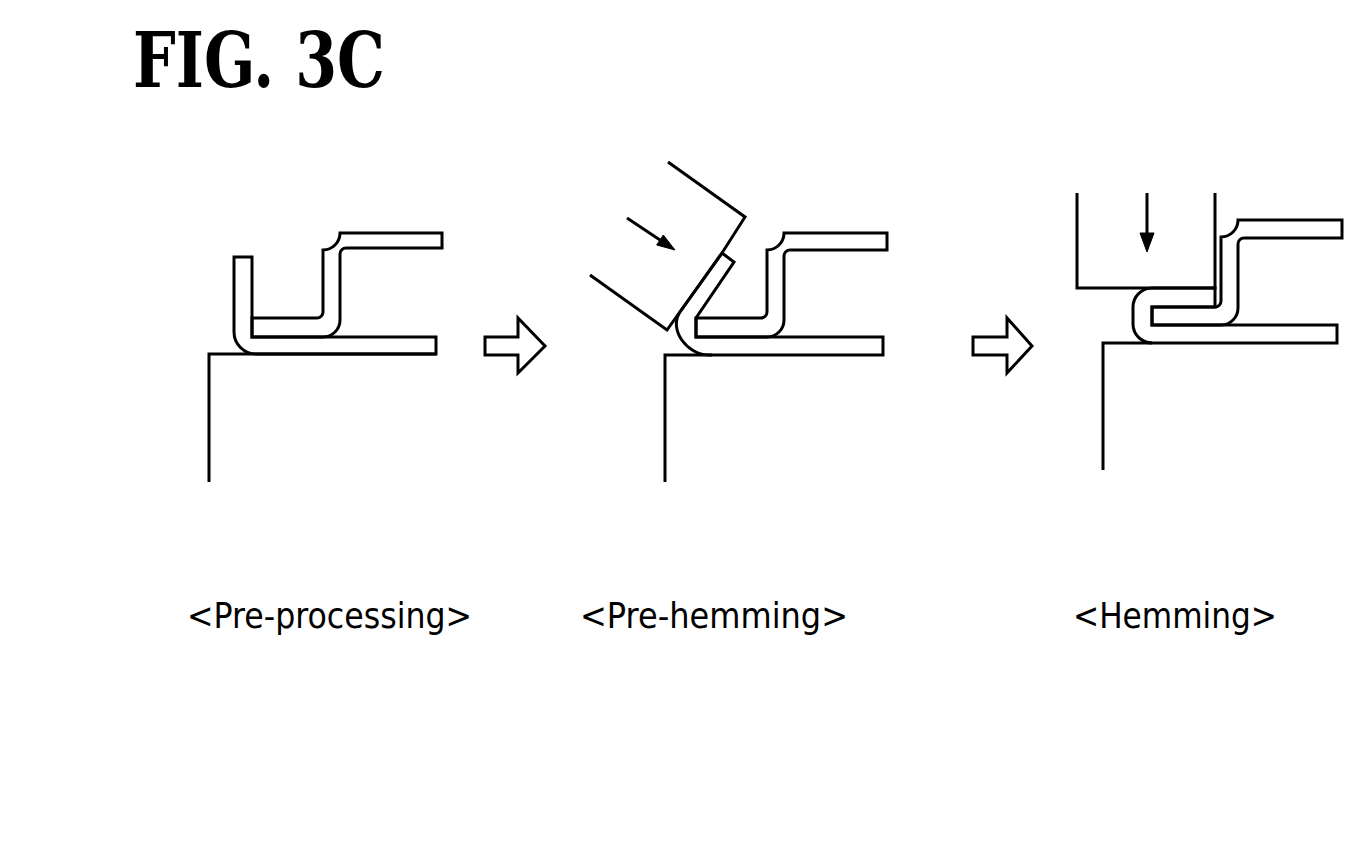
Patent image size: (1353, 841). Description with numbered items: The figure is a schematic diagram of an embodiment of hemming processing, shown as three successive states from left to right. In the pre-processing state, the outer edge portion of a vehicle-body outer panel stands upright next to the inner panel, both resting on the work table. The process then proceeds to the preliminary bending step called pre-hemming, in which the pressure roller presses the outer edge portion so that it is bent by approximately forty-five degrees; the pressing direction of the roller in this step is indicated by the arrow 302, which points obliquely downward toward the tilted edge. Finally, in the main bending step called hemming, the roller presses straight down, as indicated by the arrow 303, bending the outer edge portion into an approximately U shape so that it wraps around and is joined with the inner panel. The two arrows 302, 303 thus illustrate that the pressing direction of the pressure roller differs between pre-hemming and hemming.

The arrow indicating pre-hemming pressing direction 302 is at (647, 243).
The arrow indicating hemming pressing direction 303 is at (1147, 207).